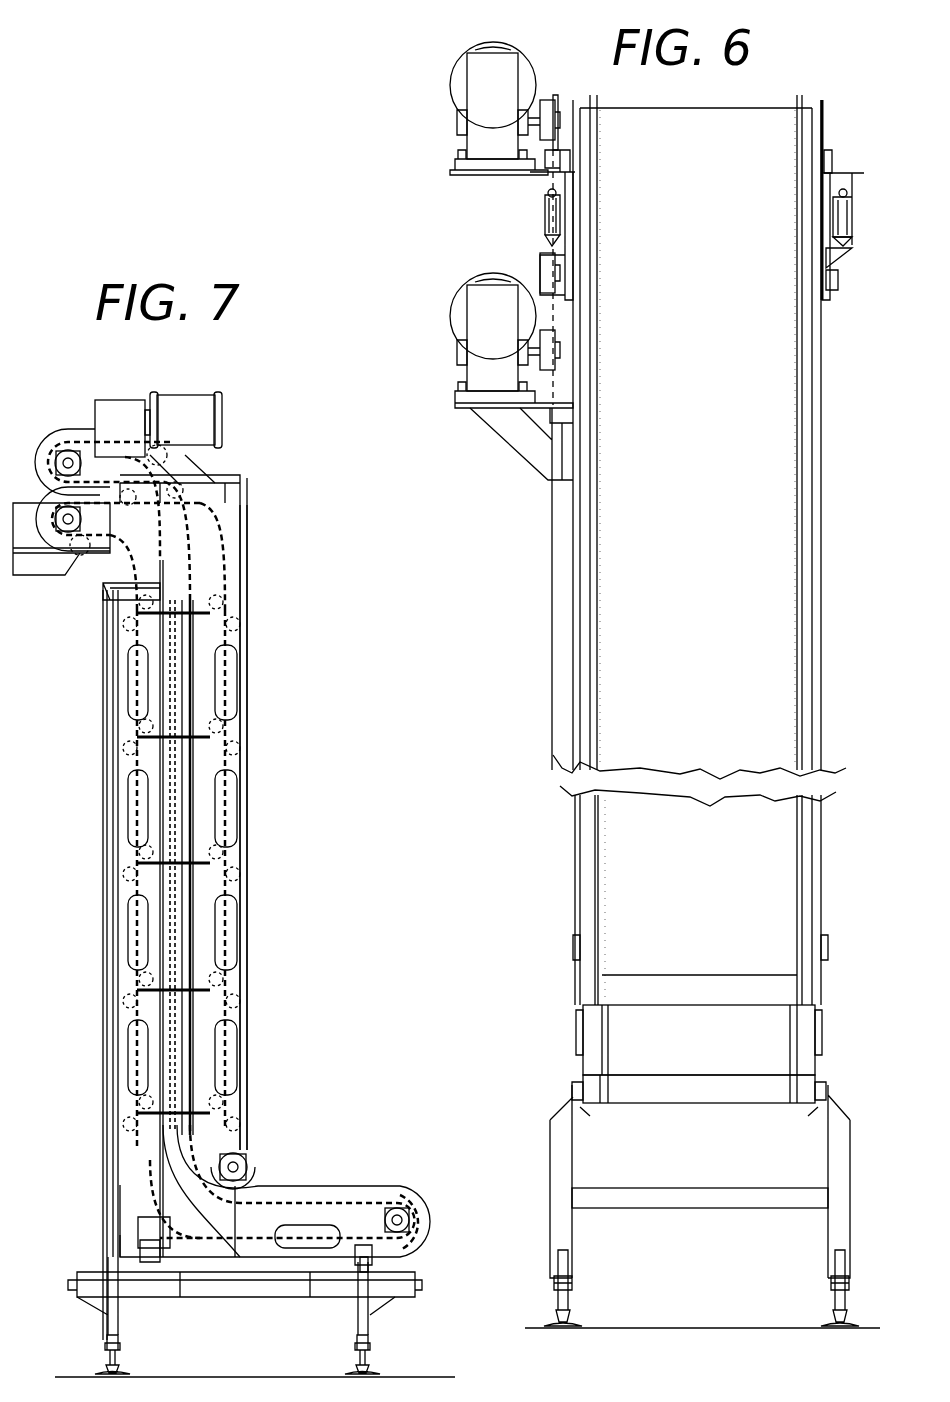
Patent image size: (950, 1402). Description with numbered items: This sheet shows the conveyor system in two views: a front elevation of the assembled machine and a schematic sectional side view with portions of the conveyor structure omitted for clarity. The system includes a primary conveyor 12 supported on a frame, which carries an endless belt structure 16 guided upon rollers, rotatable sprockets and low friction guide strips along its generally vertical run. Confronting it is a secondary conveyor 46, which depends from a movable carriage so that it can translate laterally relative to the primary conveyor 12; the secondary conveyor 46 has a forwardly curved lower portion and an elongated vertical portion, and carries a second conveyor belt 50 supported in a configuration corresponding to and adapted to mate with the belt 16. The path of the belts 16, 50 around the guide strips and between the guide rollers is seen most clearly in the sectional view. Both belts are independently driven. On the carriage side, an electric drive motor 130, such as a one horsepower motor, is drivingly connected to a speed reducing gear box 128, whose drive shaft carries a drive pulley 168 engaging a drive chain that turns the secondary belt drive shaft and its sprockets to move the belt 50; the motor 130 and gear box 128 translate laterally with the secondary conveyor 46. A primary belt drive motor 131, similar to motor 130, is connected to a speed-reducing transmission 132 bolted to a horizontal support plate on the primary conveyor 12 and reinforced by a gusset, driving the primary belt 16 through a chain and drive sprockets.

In FIG. 6, the primary conveyor 12 is at (548, 898).
In FIG. 7, the primary conveyor 12 is at (94, 731).
In FIG. 6, the endless belt structure 16 is at (782, 898).
In FIG. 7, the endless belt structure 16 is at (135, 1240).
In FIG. 6, the secondary conveyor 46 is at (854, 136).
In FIG. 7, the secondary conveyor 46 is at (258, 738).
In FIG. 6, the second conveyor belt 50 is at (760, 368).
In FIG. 7, the second conveyor belt 50 is at (240, 893).
In FIG. 6, the speed reducing gear box 128 is at (514, 119).
In FIG. 7, the speed reducing gear box 128 is at (118, 400).
In FIG. 6, the electric drive motor 130 is at (450, 86).
In FIG. 7, the electric drive motor 130 is at (186, 395).
In FIG. 6, the primary belt drive motor 131 is at (450, 318).
In FIG. 7, the primary belt drive motor 131 is at (244, 541).
In FIG. 6, the speed-reducing transmission 132 is at (512, 351).
In FIG. 6, the drive pulley 168 is at (556, 95).